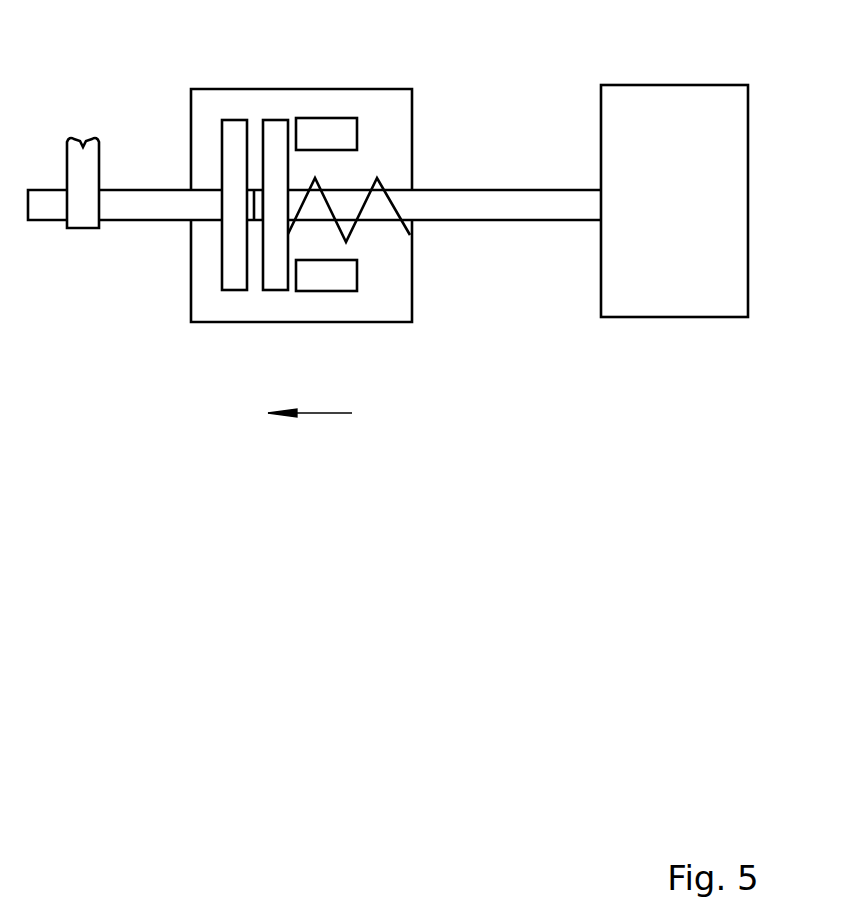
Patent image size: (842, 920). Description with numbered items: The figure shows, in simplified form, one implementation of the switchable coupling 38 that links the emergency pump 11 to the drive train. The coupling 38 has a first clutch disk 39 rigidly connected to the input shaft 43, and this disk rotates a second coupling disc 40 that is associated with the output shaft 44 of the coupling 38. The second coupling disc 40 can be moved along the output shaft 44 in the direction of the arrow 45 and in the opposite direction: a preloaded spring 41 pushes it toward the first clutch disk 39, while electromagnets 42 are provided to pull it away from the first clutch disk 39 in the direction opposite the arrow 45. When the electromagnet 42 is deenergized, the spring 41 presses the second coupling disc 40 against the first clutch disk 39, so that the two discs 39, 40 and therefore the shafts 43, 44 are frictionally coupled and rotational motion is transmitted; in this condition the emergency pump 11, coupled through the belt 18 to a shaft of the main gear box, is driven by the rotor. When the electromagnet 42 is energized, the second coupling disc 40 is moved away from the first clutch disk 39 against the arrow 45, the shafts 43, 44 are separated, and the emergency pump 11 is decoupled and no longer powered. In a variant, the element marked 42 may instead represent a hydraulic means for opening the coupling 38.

The emergency pump 11 is at (650, 318).
The belt 18 is at (85, 223).
The switchable coupling 38 is at (191, 113).
The first clutch disk 39 is at (233, 278).
The second coupling disc 40 is at (274, 278).
The preloaded spring 41 is at (380, 188).
The electromagnet 42 is at (328, 118).
The input shaft 43 is at (146, 221).
The output shaft 44 is at (500, 221).
The arrow 45 is at (323, 413).